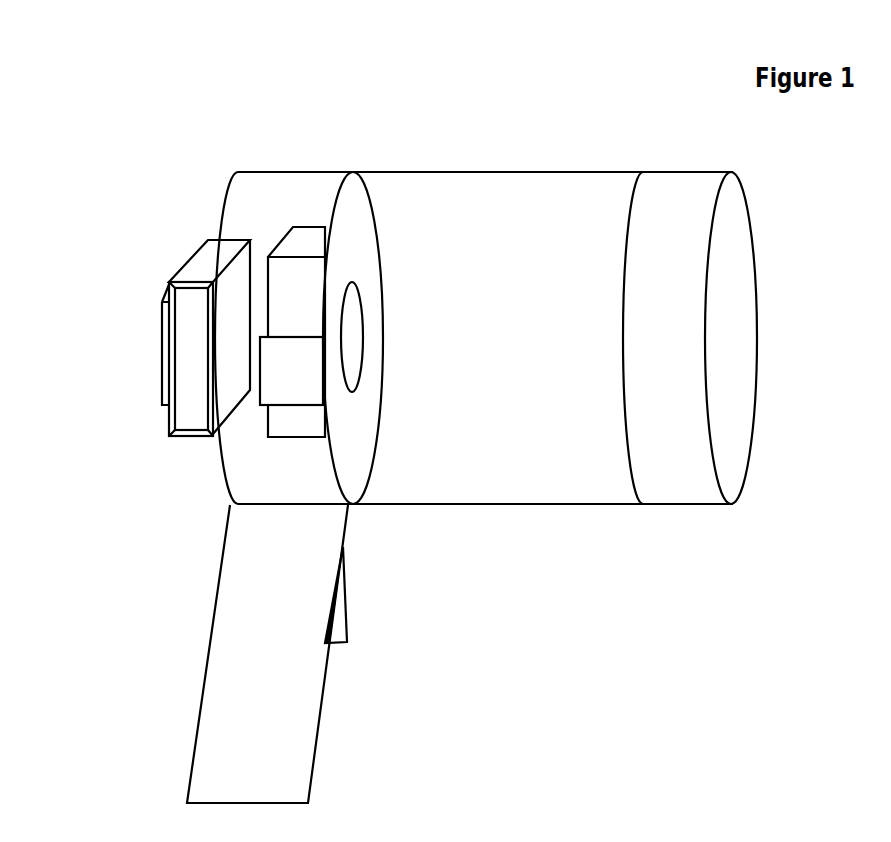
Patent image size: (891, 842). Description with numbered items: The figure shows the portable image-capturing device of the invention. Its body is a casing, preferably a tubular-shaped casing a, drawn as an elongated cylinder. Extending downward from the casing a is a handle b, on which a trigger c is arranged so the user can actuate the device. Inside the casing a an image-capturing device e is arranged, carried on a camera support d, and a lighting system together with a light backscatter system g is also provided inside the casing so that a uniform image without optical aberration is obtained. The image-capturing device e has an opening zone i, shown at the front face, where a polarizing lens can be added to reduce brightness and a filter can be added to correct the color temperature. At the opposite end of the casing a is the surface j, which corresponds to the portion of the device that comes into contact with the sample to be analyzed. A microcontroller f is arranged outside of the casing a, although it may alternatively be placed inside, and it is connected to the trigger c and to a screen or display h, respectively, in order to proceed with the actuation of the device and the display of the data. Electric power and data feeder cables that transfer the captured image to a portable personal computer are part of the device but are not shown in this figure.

The tubular-shaped casing a is at (465, 172).
The handle b is at (213, 605).
The trigger c is at (347, 640).
The camera support d is at (293, 375).
The image-capturing device e is at (300, 422).
The microcontroller f is at (183, 307).
The light backscatter system g is at (347, 433).
The screen or display h is at (161, 348).
The opening zone i is at (352, 338).
The surface j is at (725, 373).